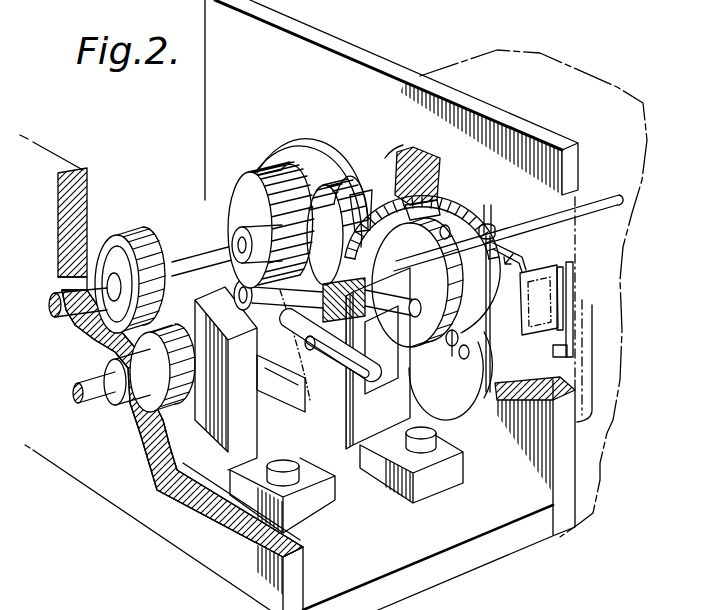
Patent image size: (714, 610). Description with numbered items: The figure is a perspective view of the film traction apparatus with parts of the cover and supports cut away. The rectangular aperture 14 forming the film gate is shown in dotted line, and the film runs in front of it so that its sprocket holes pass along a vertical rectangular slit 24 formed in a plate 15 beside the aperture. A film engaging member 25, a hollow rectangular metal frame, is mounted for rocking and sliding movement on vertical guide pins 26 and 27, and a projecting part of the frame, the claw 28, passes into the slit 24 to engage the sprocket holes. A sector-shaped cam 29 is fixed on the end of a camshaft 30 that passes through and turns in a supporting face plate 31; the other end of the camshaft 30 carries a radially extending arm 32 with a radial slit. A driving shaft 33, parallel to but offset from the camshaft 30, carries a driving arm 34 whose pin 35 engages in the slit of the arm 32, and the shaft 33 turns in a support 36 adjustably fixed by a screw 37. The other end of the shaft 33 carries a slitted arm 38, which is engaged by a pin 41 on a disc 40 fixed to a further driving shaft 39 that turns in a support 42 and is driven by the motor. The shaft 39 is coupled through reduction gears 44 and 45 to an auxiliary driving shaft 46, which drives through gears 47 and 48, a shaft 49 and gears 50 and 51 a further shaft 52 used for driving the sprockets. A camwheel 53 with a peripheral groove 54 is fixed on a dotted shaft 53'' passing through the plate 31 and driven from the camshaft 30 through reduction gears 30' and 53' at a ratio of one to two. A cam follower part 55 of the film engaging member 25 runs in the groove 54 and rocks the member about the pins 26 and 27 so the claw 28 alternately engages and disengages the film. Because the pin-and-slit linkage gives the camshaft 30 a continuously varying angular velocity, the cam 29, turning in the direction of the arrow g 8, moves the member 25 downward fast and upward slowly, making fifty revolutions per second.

The arrow g 8 is at (513, 252).
The rectangular aperture 14 is at (556, 357).
The plate 15 is at (580, 304).
The vertical rectangular slit 24 is at (570, 270).
The film engaging member 25 is at (532, 270).
The vertical guide pin 26 is at (492, 219).
The vertical guide pin 27 is at (486, 396).
The claw 28 is at (565, 330).
The cam 29 is at (540, 332).
The camshaft 30 is at (503, 314).
The reduction gear 30' is at (462, 347).
The supporting face plate 31 is at (343, 63).
The radially extending arm 32 is at (455, 372).
The driving shaft 33 is at (374, 372).
The driving arm 34 is at (412, 322).
The pin 35 is at (412, 358).
The support 36 is at (437, 473).
The screw 37 is at (443, 442).
The radially extending arm 38 is at (372, 392).
The further driving shaft 39 is at (105, 400).
The disc 40 is at (285, 415).
The pin 41 is at (305, 380).
The support 42 is at (313, 513).
The reduction gear 44 is at (187, 407).
The reduction gear 45 is at (105, 237).
The auxiliary driving shaft 46 is at (192, 257).
The gear 47 is at (248, 192).
The gear 48 is at (215, 247).
The shaft 49 is at (320, 196).
The gear 50 is at (350, 176).
The gear 51 is at (445, 210).
The further shaft 52 is at (599, 195).
The camwheel 53 is at (419, 169).
The reduction gear 53' is at (365, 191).
The shaft 53'' is at (401, 137).
The peripheral groove 54 is at (416, 198).
The cam follower part 55 is at (448, 228).